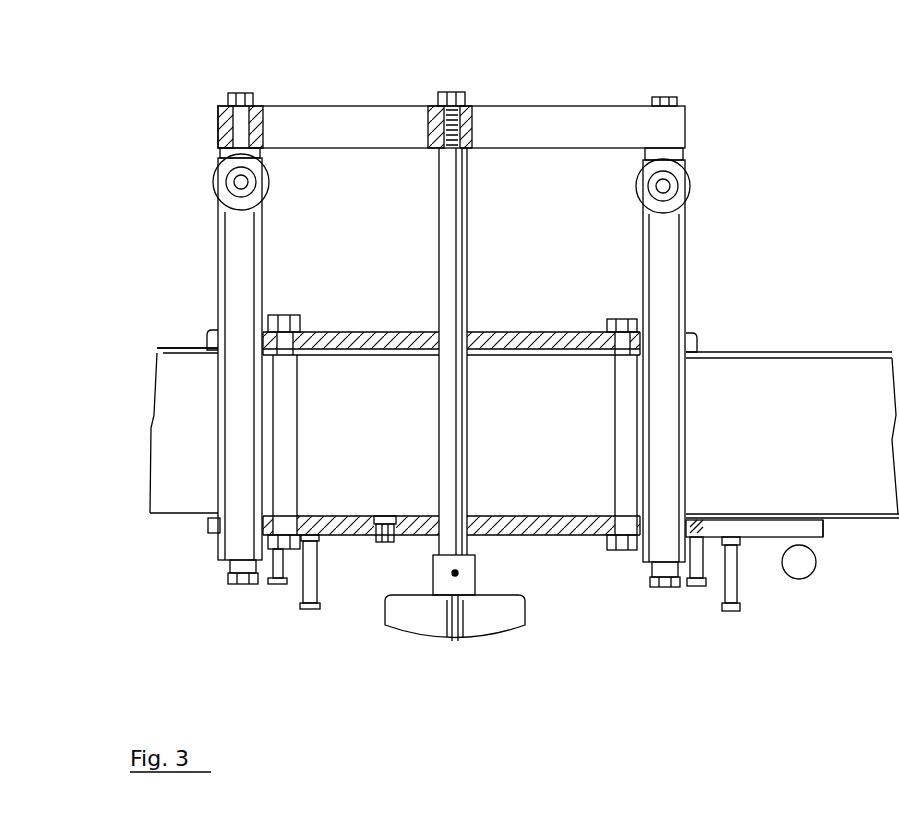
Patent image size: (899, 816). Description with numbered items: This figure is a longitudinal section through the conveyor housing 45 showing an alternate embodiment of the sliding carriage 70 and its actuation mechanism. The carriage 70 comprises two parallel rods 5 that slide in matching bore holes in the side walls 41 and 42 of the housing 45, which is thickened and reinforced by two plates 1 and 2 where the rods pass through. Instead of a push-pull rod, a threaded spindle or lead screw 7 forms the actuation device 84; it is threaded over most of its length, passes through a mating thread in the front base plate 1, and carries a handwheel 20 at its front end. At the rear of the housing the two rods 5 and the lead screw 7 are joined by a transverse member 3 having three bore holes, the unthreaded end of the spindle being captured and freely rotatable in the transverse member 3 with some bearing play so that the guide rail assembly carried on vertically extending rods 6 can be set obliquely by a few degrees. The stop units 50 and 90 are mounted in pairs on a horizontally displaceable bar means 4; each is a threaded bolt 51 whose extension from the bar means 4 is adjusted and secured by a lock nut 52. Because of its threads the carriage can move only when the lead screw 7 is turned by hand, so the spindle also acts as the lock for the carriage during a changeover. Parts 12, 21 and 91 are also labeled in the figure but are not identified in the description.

The front base plate 1 is at (532, 535).
The reinforcing plate 2 is at (532, 333).
The transverse member 3 is at (398, 122).
The bar means 4 is at (805, 528).
The rods 5 is at (228, 284).
The vertically extending rods 6 is at (260, 193).
The lead screw 7 is at (457, 207).
The ball 12 is at (805, 566).
The handwheel 20 is at (438, 613).
The locking nut 21 is at (383, 543).
The front side wall 41 is at (160, 512).
The side wall 42 is at (160, 349).
The conveyor housing 45 is at (189, 530).
The stop unit 50 is at (272, 613).
The threaded bolt 51 is at (752, 585).
The lock nut 52 is at (738, 545).
The sliding carriage 70 is at (714, 208).
The actuation device 84 is at (486, 659).
The stop unit 90 is at (719, 589).
The bracket end 91 is at (834, 548).